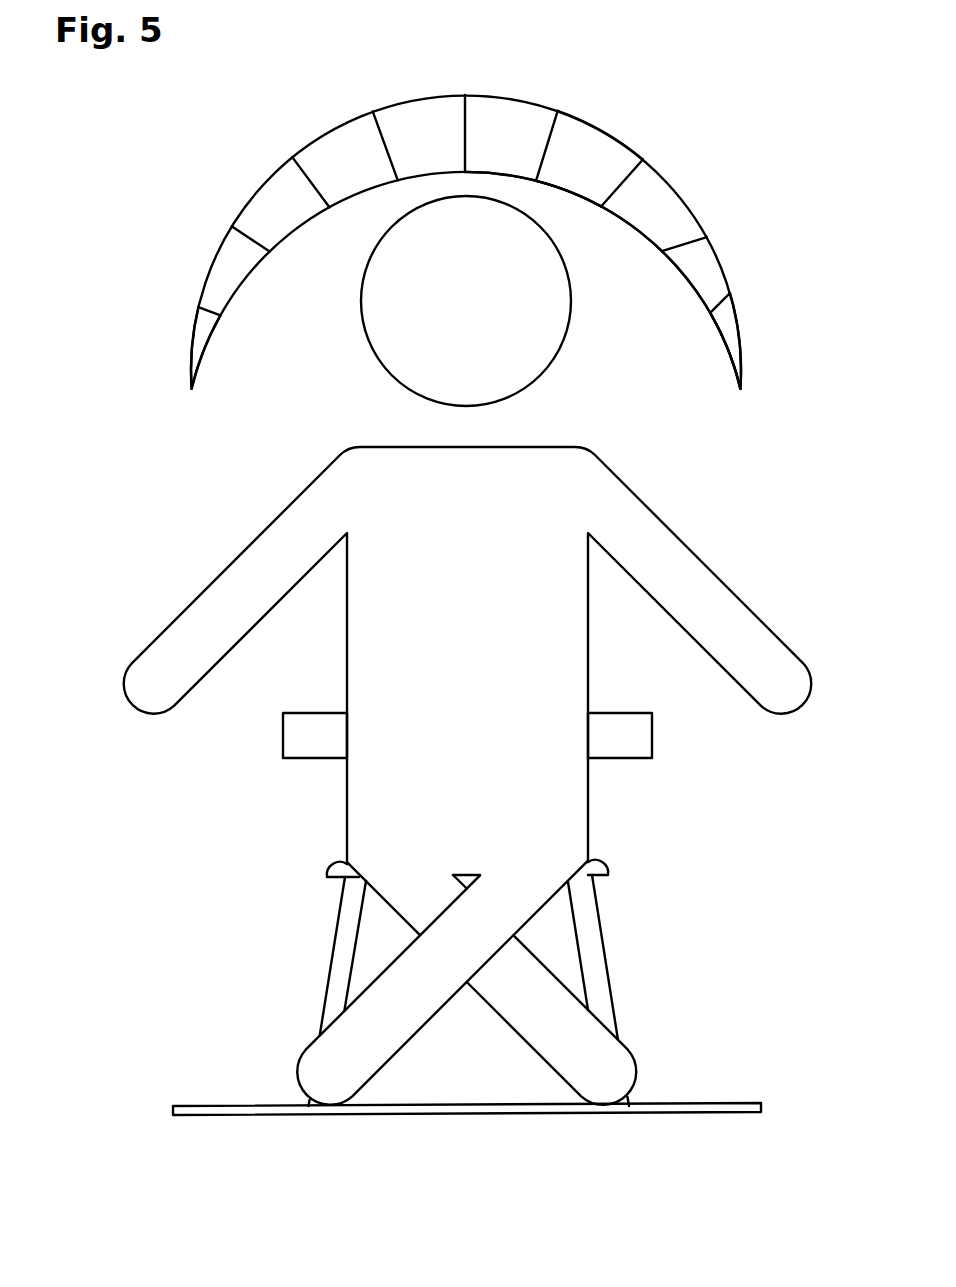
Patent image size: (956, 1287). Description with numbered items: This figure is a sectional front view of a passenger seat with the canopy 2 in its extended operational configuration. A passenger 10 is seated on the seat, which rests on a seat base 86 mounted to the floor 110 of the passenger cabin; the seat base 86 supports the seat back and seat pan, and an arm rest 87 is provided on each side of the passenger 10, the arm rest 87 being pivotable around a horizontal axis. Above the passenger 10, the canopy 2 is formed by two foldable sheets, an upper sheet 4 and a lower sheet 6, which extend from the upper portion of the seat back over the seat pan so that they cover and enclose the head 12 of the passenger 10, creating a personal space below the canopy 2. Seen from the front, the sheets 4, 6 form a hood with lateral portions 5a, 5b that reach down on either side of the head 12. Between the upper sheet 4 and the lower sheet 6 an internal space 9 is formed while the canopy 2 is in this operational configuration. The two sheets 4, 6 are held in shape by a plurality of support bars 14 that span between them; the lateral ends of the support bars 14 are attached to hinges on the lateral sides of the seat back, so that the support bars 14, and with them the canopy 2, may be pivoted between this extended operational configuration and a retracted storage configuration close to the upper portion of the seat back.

The canopy 2 is at (467, 209).
The upper sheet 4 is at (625, 168).
The lateral portion 5a is at (180, 340).
The lateral portion 5b is at (760, 303).
The lower sheet 6 is at (650, 240).
The internal space 9 is at (585, 152).
The passenger 10 is at (481, 776).
The head 12 is at (335, 378).
The support bars 14 is at (203, 309).
The seat base 86 is at (613, 944).
The arm rest 87 is at (264, 762).
The floor 110 is at (712, 1114).